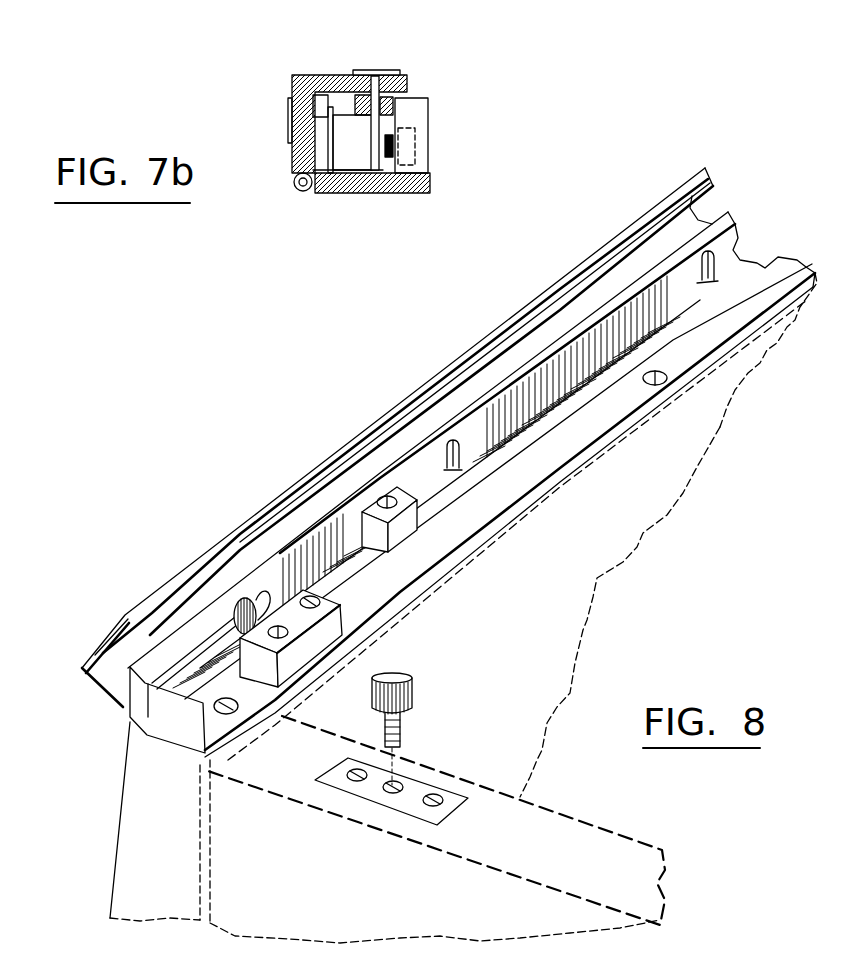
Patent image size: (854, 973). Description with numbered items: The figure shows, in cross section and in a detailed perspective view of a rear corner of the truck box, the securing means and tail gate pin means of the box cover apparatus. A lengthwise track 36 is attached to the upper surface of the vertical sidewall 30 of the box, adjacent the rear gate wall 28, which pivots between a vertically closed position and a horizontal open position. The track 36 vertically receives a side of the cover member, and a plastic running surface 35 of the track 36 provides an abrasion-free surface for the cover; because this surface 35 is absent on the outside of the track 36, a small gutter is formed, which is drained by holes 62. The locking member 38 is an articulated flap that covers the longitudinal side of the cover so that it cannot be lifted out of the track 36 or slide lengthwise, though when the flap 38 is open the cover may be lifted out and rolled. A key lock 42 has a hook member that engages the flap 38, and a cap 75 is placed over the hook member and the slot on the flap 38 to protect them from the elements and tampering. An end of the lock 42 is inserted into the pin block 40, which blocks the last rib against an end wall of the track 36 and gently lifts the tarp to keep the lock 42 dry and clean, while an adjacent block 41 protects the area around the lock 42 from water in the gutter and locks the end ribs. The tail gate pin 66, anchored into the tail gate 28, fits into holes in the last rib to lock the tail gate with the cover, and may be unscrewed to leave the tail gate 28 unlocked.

In FIG. 8, the rear gate wall 28 is at (520, 853).
In FIG. 8, the vertical sidewall 30 is at (508, 653).
In FIG. 8, the plastic running surface 35 is at (493, 508).
In FIG. 7b, the lengthwise track 36 is at (400, 190).
In FIG. 8, the lengthwise track 36 is at (663, 287).
In FIG. 8, the locking member 38 is at (343, 447).
In FIG. 7b, the pin block 40 is at (425, 108).
In FIG. 8, the pin block 40 is at (315, 633).
In FIG. 8, the block 41 is at (433, 562).
In FIG. 7b, the key lock 42 is at (350, 160).
In FIG. 8, the key lock 42 is at (235, 608).
In FIG. 8, the drain hole 62 is at (462, 458).
In FIG. 8, the tail gate pin 66 is at (418, 681).
In FIG. 7b, the cap 75 is at (380, 70).